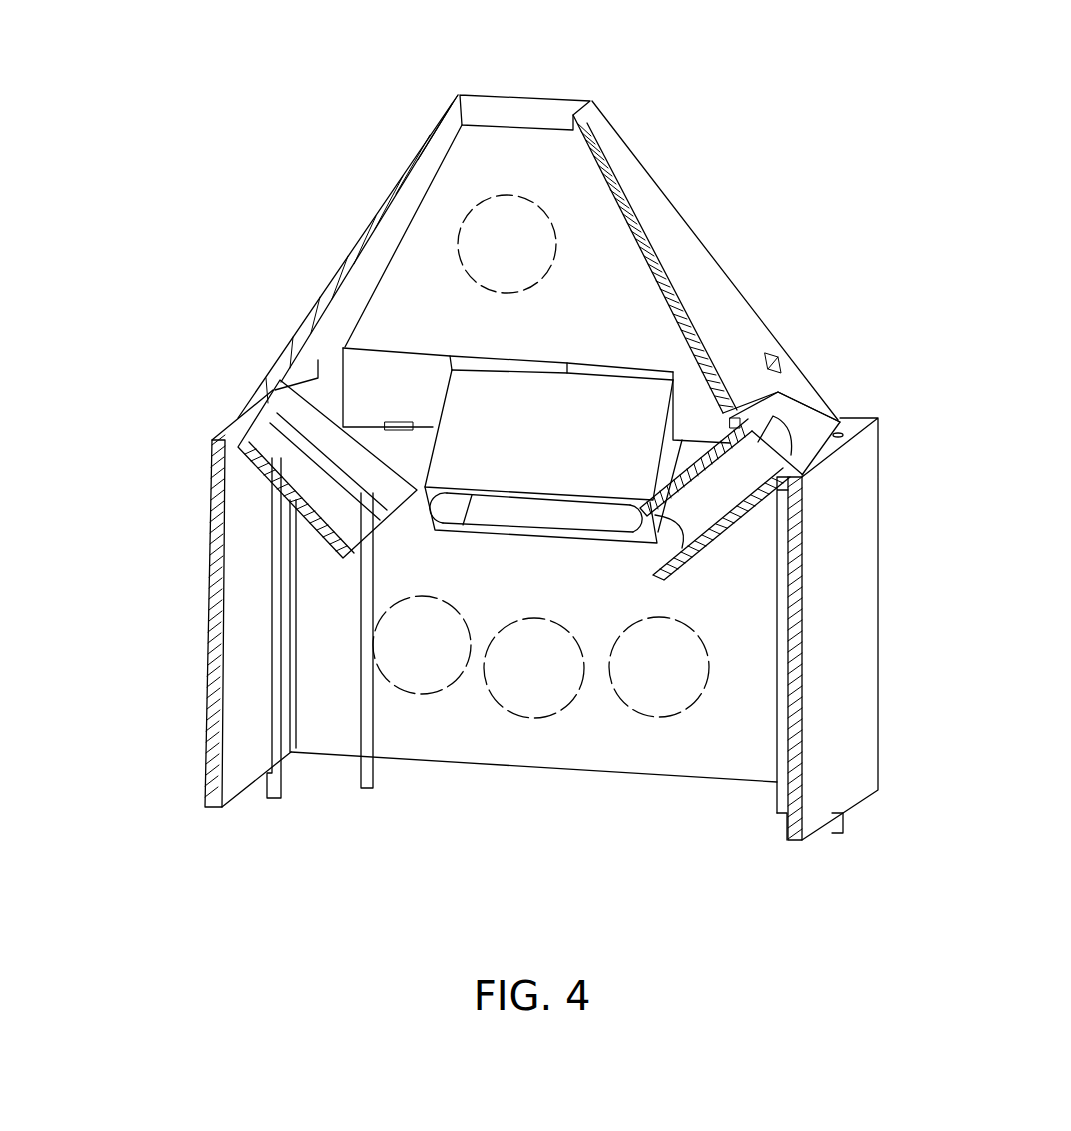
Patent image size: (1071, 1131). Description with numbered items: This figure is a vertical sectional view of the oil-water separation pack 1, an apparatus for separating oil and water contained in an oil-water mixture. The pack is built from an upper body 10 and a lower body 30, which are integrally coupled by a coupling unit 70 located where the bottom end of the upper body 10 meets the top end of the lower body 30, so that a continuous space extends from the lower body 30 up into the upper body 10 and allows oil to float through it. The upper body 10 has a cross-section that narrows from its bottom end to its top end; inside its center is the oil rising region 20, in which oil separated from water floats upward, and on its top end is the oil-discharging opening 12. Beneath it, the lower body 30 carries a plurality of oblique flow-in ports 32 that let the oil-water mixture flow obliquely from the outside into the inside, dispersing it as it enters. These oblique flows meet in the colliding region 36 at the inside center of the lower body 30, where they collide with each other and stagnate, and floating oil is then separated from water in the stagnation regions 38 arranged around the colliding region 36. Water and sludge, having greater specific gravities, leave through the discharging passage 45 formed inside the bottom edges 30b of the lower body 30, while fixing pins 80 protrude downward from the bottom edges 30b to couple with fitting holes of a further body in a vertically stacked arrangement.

The oil-water separation pack 1 is at (731, 122).
The upper body 10 is at (352, 262).
The oil-discharging opening 12 is at (527, 108).
The oil rising region 20 is at (460, 237).
The lower body 30 is at (205, 619).
The bottom edges 30b is at (570, 770).
The oblique flow-in ports 32 is at (287, 470).
The colliding region 36 is at (523, 717).
The stagnation regions 38 is at (425, 690).
The discharging passage 45 is at (445, 800).
The coupling unit 70 is at (375, 402).
The fixing pins 80 is at (363, 793).